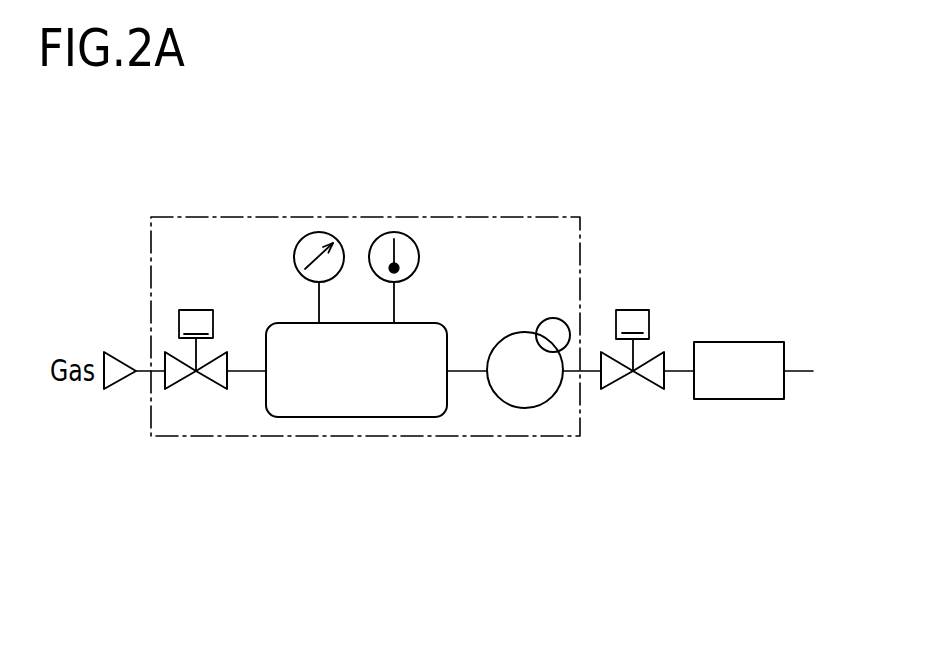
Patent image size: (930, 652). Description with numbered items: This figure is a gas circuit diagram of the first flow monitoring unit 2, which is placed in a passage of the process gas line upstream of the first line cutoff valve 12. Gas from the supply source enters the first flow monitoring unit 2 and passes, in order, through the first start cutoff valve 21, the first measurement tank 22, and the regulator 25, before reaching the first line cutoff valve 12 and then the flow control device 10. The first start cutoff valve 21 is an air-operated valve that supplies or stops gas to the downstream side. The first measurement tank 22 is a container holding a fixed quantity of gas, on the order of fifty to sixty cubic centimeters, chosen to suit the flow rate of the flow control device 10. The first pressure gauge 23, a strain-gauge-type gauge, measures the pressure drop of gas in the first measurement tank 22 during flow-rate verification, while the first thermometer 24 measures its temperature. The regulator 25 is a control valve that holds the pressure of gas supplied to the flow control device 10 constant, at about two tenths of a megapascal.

The first flow monitoring unit 2 is at (533, 217).
The flow control device 10 is at (748, 342).
The first line cutoff valve 12 is at (634, 310).
The first start cutoff valve 21 is at (196, 310).
The first measurement tank 22 is at (357, 418).
The first pressure gauge 23 is at (320, 232).
The first thermometer 24 is at (395, 232).
The regulator 25 is at (525, 332).